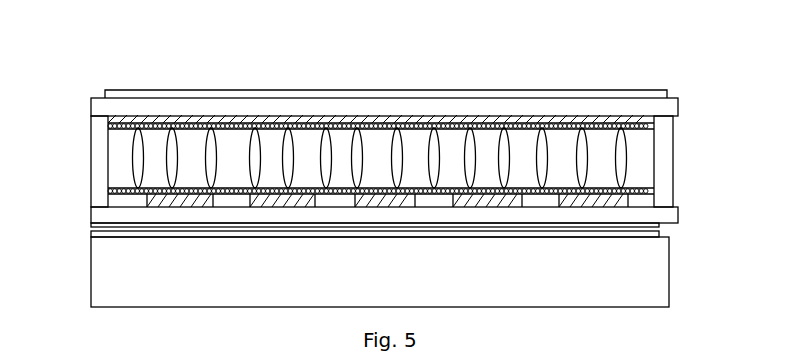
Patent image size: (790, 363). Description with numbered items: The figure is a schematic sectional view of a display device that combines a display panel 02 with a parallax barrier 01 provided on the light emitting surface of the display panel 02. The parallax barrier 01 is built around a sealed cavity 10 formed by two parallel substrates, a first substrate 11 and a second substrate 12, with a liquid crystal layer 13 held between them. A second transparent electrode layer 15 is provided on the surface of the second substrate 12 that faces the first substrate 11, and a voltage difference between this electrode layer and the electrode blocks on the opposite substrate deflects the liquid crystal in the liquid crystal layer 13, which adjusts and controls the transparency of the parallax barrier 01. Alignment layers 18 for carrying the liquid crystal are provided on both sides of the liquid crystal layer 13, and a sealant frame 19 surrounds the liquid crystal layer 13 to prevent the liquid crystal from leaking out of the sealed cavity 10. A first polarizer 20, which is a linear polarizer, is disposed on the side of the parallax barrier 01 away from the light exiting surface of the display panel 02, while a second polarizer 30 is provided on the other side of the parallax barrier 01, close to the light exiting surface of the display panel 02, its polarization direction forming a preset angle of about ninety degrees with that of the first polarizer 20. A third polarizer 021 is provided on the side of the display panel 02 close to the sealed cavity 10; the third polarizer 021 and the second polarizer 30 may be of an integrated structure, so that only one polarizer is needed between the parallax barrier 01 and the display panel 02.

The parallax barrier 01 is at (50, 85).
The display panel 02 is at (103, 280).
The third polarizer 021 is at (103, 233).
The second polarizer 30 is at (103, 225).
The sealed cavity 10 is at (713, 112).
The first substrate 11 is at (663, 214).
The second substrate 12 is at (662, 106).
The liquid crystal layer 13 is at (627, 161).
The second transparent electrode layer 15 is at (629, 122).
The alignment layers 18 is at (117, 127).
The sealant frame 19 is at (659, 132).
The first polarizer 20 is at (566, 93).